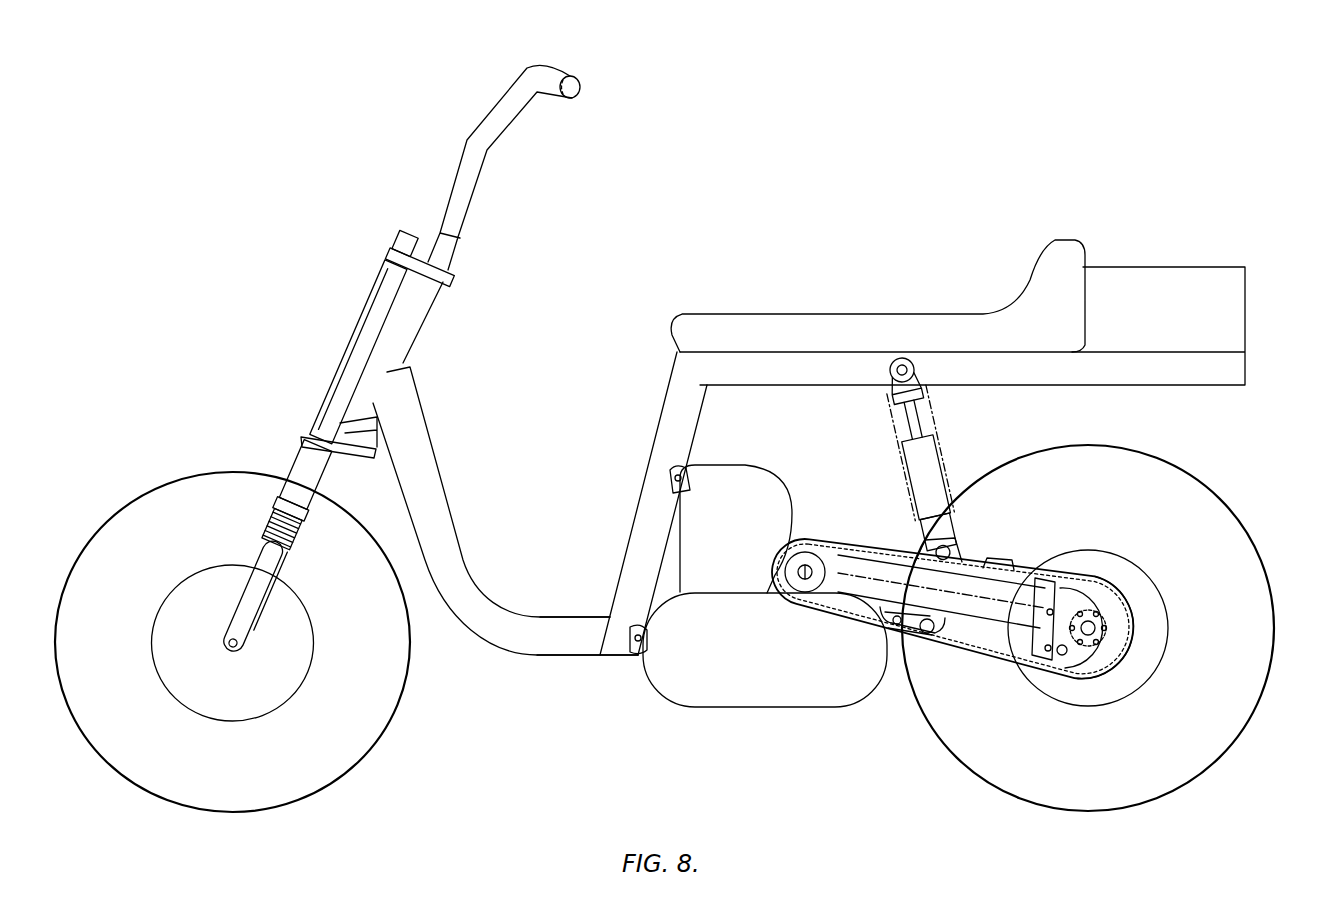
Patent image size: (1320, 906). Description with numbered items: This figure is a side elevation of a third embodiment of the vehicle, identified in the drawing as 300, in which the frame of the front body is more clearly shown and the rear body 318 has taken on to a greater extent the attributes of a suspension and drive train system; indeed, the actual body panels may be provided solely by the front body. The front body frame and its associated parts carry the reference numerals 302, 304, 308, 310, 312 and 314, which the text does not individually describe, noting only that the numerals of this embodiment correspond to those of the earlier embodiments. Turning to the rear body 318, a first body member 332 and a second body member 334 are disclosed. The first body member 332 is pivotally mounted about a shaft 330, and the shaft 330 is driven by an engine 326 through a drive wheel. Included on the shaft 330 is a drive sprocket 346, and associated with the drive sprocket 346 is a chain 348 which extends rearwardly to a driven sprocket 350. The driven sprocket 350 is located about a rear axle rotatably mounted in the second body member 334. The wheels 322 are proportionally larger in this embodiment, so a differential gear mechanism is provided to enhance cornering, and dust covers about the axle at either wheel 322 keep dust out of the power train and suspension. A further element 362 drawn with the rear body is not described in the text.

The motorcycle 300 is at (781, 266).
The frame front down tube 302 is at (440, 448).
The handlebar 304 is at (552, 75).
The front wheel 308 is at (363, 745).
The lower frame tube 310 is at (568, 648).
The rear frame tube 312 is at (682, 382).
The seat 314 is at (875, 330).
The rear body 318 is at (1108, 566).
The wheels 322 is at (1152, 790).
The engine 326 is at (740, 490).
The shaft 330 is at (800, 582).
The first body member 332 is at (853, 547).
The second body member 334 is at (1030, 565).
The drive sprocket 346 is at (835, 605).
The chain 348 is at (1000, 650).
The driven sprocket 350 is at (1108, 622).
The shock absorber 362 is at (958, 445).